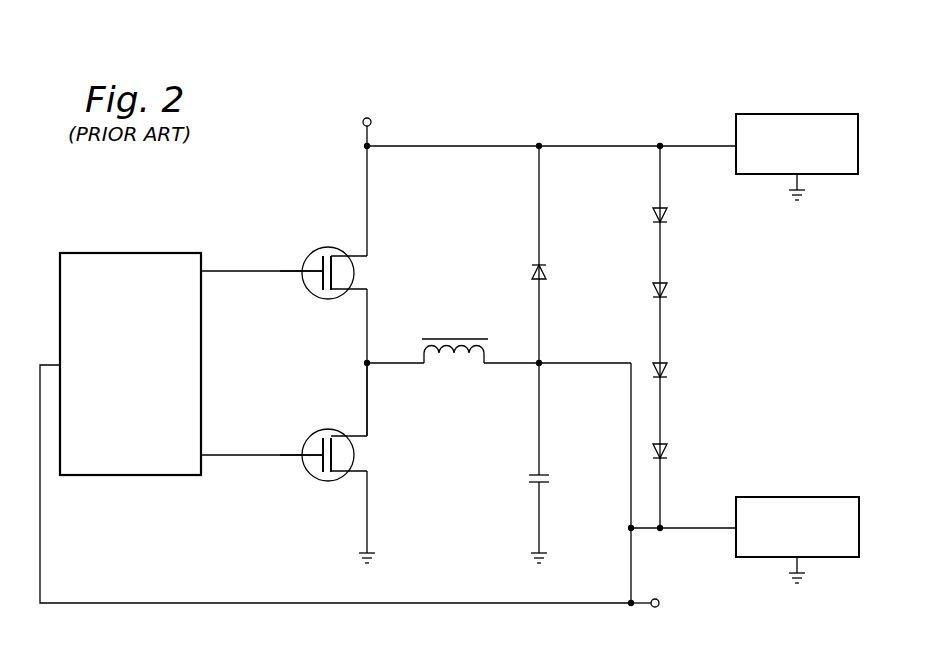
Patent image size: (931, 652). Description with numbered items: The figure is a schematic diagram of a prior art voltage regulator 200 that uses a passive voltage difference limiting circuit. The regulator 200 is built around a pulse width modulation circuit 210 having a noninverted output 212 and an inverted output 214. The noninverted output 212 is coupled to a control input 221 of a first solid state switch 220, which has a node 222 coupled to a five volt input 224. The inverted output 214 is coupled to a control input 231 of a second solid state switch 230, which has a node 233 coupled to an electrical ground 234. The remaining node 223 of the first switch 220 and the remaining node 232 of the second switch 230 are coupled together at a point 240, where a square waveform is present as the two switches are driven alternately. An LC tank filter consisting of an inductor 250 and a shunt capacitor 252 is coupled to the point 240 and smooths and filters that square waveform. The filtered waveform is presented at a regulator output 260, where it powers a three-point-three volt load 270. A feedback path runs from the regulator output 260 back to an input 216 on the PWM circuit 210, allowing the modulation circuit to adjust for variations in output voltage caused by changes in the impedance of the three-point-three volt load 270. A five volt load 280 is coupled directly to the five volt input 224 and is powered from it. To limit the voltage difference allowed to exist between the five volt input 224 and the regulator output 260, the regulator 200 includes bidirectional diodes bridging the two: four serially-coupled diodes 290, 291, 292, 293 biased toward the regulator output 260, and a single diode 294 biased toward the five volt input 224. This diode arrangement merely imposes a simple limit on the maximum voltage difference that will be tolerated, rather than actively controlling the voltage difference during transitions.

The prior art regulator 200 is at (626, 77).
The pulse width modulation circuit 210 is at (131, 253).
The noninverted output 212 is at (207, 266).
The inverted output 214 is at (207, 460).
The input 216 is at (55, 362).
The first solid state switch 220 is at (328, 247).
The control input 221 is at (302, 268).
The node 222 is at (373, 255).
The node 223 is at (373, 290).
The 5 volt input 224 is at (362, 122).
The second solid state switch 230 is at (325, 481).
The control input 231 is at (302, 460).
The node 232 is at (373, 435).
The node 233 is at (373, 472).
The electrical ground 234 is at (360, 560).
The point 240 is at (362, 363).
The inductor 250 is at (488, 351).
The shunt capacitor 252 is at (551, 480).
The regulator output 260 is at (636, 532).
The 3.3 volt load 270 is at (797, 497).
The 5 volt load 280 is at (797, 114).
The diode 290 is at (667, 216).
The diode 291 is at (667, 291).
The diode 292 is at (667, 370).
The diode 293 is at (667, 451).
The single diode 294 is at (530, 270).